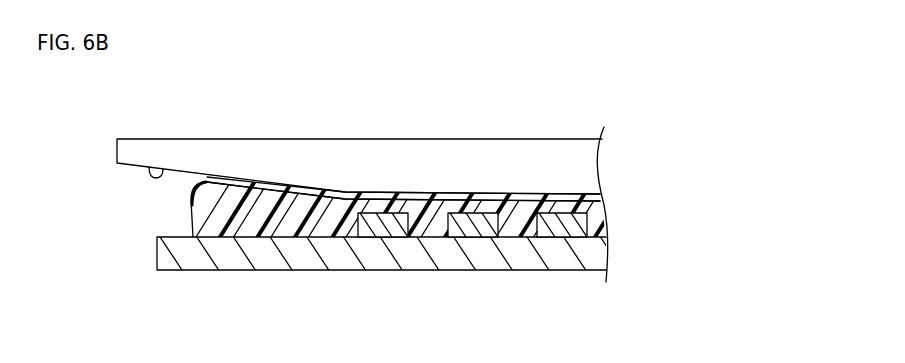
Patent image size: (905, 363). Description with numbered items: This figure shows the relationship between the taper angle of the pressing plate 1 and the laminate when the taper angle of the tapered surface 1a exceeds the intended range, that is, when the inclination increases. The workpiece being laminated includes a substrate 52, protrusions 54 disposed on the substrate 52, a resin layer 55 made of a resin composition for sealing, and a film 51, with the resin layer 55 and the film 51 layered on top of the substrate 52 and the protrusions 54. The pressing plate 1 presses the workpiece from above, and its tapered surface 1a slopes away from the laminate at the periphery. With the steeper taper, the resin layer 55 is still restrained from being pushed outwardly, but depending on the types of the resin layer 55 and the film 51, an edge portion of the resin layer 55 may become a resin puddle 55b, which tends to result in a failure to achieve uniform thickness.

The pressing plate 1 is at (500, 153).
The tapered surface 1a is at (162, 172).
The film 51 is at (263, 187).
The substrate 52 is at (415, 257).
The protrusions 54 is at (479, 228).
The resin layer 55 is at (337, 226).
The resin puddle 55b is at (208, 205).